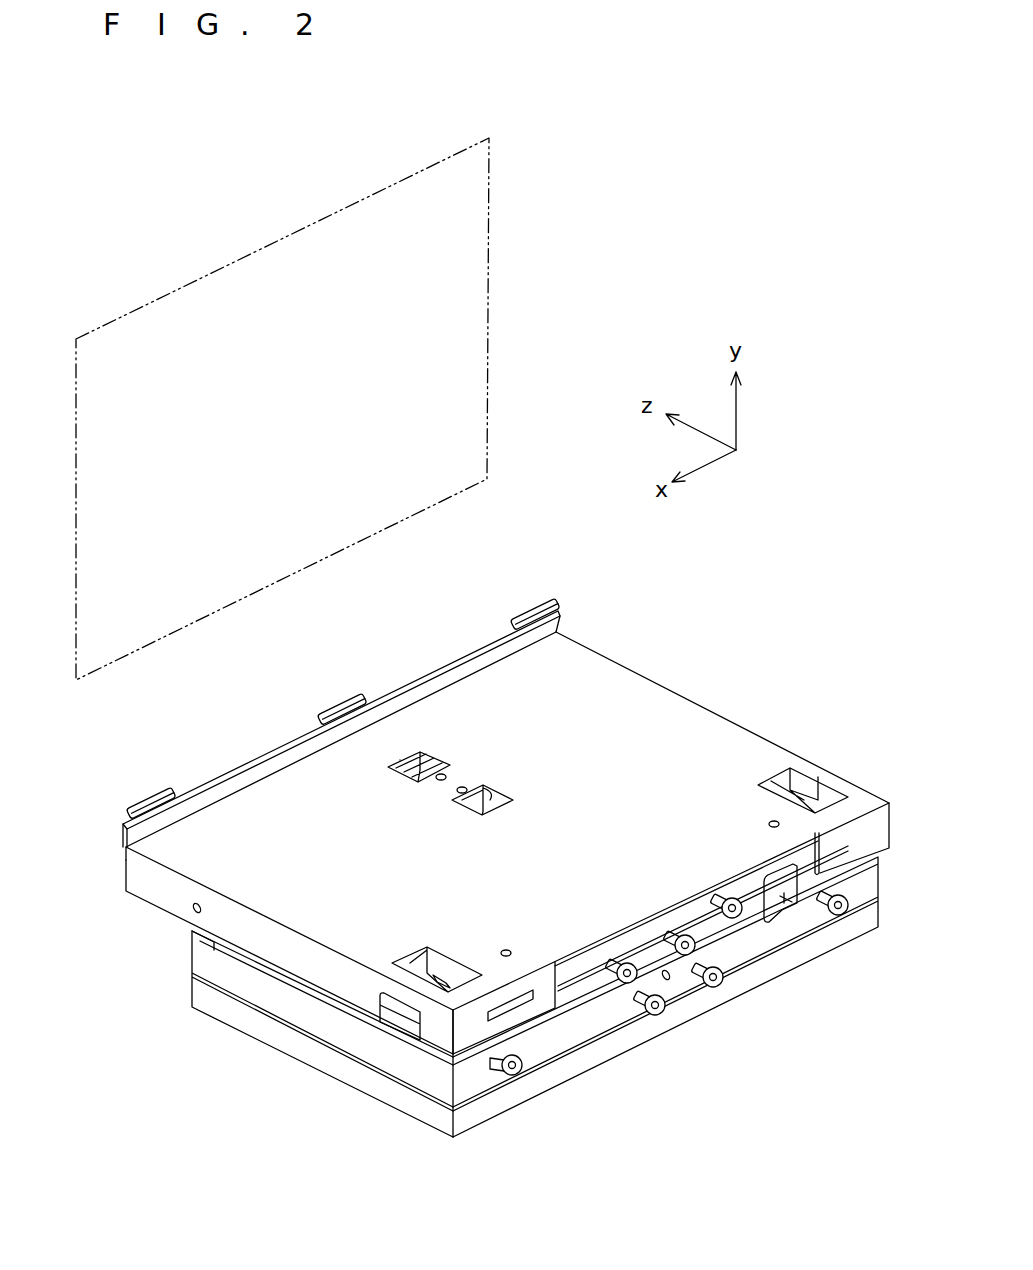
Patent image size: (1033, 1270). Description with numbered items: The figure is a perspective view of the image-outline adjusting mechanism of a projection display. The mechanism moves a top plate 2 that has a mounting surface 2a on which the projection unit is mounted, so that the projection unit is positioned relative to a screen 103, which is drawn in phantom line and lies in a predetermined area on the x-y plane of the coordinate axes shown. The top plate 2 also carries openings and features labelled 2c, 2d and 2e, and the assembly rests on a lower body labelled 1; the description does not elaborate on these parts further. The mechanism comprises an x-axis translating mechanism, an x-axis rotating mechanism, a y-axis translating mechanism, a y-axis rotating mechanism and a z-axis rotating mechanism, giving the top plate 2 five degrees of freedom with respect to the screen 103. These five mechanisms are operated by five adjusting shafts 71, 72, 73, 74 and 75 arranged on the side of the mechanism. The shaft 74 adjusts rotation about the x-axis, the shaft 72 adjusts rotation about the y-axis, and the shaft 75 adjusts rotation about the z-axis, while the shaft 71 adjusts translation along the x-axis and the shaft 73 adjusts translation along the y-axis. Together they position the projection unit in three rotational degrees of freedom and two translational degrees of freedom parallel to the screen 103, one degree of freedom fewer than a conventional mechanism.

The screen 103 is at (490, 287).
The top plate 2 is at (681, 700).
The mounting surface 2a is at (737, 747).
The engagement opening 2c is at (800, 785).
The opening 2d is at (420, 963).
The protrusion 2e is at (445, 977).
The base 1 is at (392, 1092).
The shaft 71 is at (617, 960).
The shaft 72 is at (680, 935).
The shaft 73 is at (662, 1012).
The shaft 74 is at (721, 984).
The shaft 75 is at (727, 898).